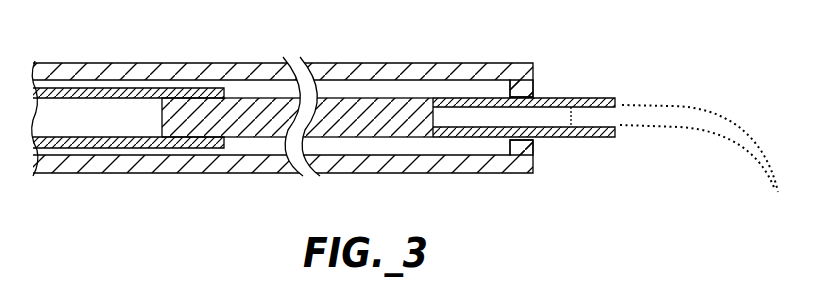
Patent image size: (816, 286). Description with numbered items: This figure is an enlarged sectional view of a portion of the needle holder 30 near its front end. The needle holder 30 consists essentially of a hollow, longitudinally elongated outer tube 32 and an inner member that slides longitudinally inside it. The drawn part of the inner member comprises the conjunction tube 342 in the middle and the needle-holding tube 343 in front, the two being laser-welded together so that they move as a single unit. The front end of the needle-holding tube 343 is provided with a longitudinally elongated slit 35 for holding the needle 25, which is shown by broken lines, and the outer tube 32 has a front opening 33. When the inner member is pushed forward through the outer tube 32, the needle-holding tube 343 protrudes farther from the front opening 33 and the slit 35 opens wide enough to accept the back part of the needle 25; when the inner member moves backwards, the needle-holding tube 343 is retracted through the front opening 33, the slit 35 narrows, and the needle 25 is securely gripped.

The needle holder 30 is at (323, 120).
The outer tube 32 is at (127, 63).
The front opening 33 is at (535, 95).
The conjunction tube 342 is at (197, 89).
The needle-holding tube 343 is at (352, 123).
The slit 35 is at (463, 120).
The needle 25 is at (717, 136).